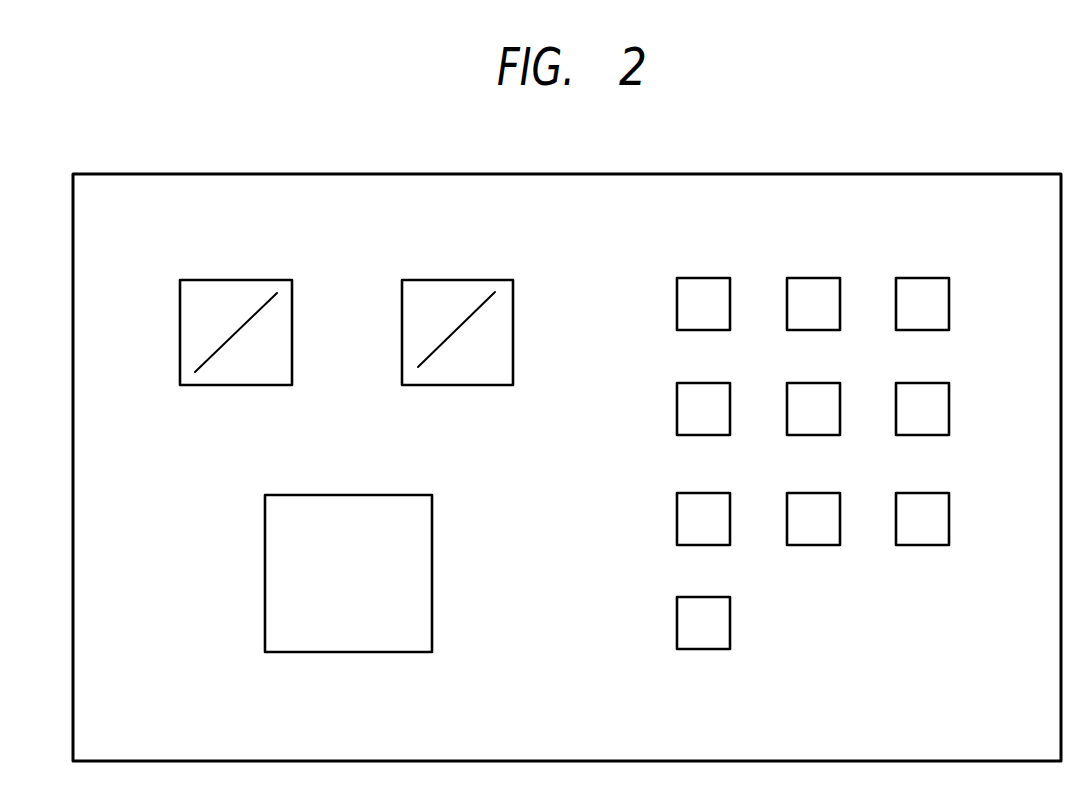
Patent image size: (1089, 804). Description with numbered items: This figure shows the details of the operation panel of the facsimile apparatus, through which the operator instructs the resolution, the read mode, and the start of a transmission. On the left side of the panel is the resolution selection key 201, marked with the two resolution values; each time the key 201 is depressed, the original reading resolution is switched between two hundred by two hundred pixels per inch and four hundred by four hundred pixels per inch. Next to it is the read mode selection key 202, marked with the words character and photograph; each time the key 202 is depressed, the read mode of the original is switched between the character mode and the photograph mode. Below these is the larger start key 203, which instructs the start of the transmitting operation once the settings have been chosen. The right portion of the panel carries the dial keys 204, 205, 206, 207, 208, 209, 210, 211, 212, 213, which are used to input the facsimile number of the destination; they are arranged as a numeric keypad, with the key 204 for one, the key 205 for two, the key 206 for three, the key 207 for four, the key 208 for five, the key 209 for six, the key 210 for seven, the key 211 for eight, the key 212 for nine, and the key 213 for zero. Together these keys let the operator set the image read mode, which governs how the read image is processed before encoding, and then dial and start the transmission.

The resolution selection key 201 is at (250, 281).
The read mode selection key 202 is at (490, 281).
The start key 203 is at (380, 496).
The dial key 204 is at (710, 278).
The dial key 205 is at (815, 278).
The dial key 206 is at (925, 278).
The dial key 207 is at (710, 383).
The dial key 208 is at (818, 383).
The dial key 209 is at (927, 383).
The dial key 210 is at (712, 493).
The dial key 211 is at (822, 493).
The dial key 212 is at (929, 493).
The dial key 213 is at (712, 597).